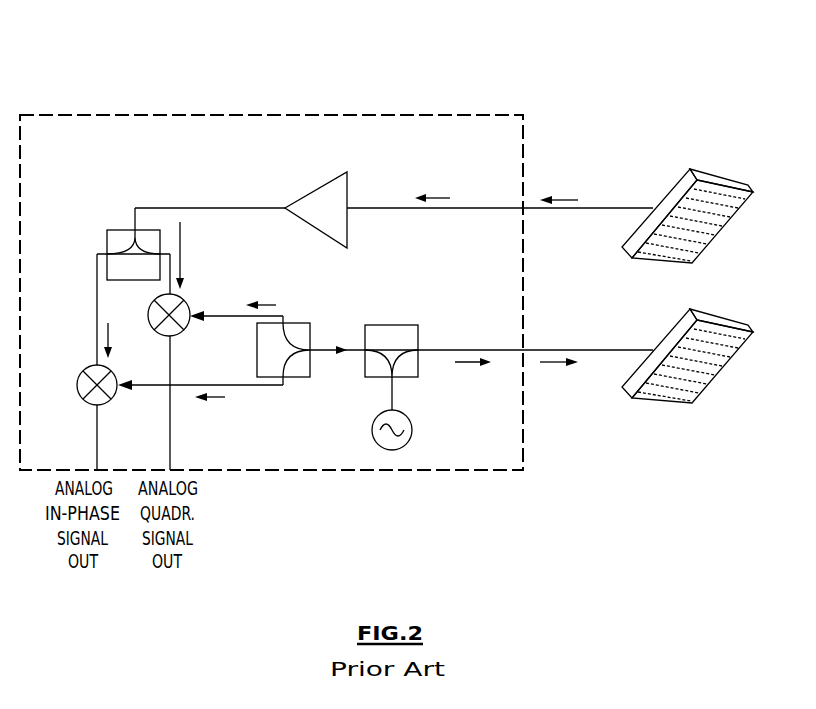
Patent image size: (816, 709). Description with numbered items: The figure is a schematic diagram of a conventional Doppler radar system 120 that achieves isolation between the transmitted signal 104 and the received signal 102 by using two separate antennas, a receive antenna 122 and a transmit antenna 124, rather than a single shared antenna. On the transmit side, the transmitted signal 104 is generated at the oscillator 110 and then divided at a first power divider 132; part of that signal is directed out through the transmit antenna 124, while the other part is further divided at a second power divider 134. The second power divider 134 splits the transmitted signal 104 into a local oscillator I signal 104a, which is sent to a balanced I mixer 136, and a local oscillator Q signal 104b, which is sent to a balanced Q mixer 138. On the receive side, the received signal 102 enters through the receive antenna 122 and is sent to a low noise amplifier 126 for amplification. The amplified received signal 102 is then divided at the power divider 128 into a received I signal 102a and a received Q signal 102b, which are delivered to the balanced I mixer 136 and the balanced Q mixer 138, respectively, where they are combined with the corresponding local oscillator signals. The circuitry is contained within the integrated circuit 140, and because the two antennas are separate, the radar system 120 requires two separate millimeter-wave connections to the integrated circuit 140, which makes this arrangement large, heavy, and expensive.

The received signal 102 is at (568, 197).
The received I signal 102a is at (112, 333).
The received Q signal 102b is at (181, 240).
The transmitted signal 104 is at (553, 365).
The local oscillator I signal 104a is at (224, 397).
The local oscillator Q signal 104b is at (275, 305).
The oscillator 110 is at (376, 442).
The Doppler radar system 120 is at (608, 74).
The receive antenna 122 is at (715, 178).
The transmit antenna 124 is at (715, 318).
The low noise amplifier 126 is at (349, 185).
The power divider 128 is at (117, 230).
The first power divider 132 is at (418, 338).
The second power divider 134 is at (301, 323).
The balanced I mixer 136 is at (103, 405).
The balanced Q mixer 138 is at (183, 333).
The integrated circuit 140 is at (230, 115).